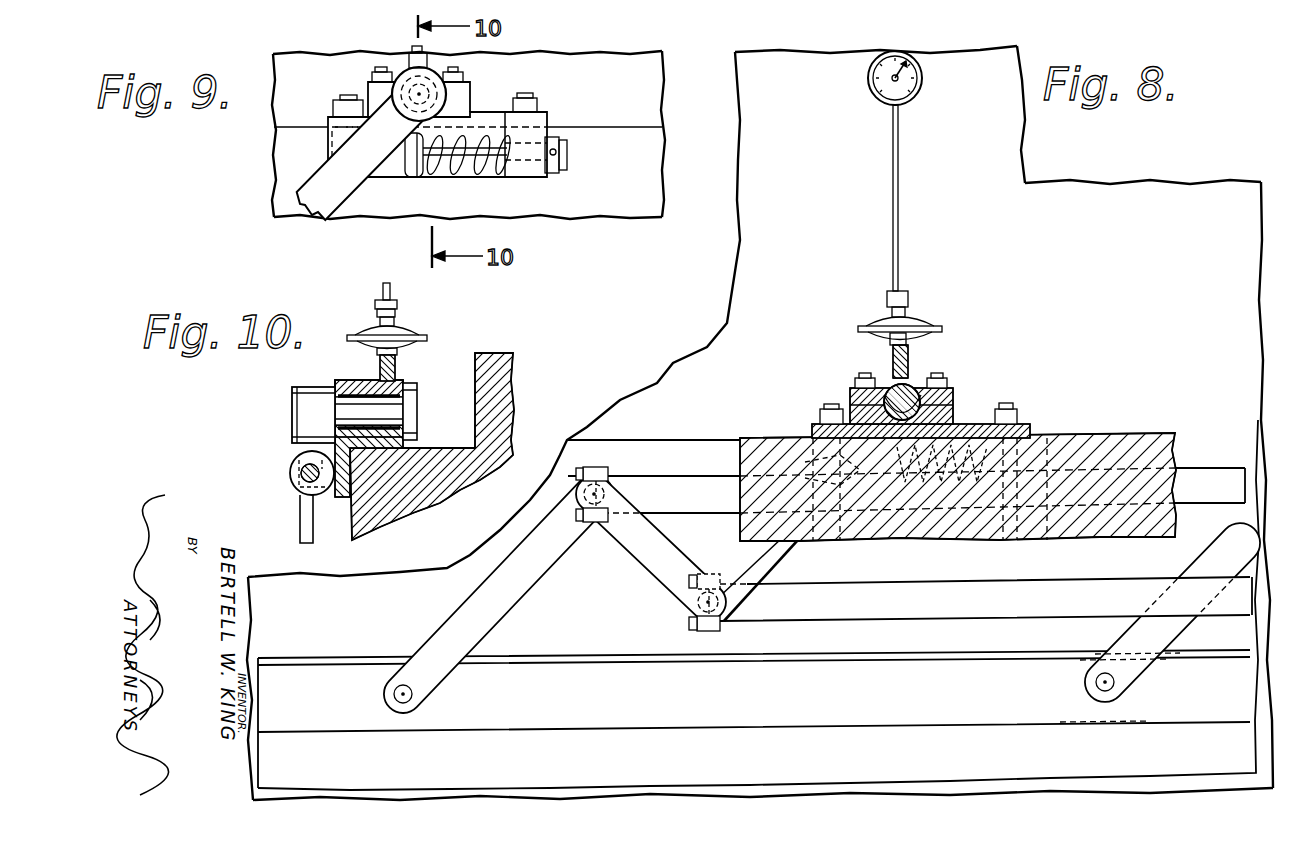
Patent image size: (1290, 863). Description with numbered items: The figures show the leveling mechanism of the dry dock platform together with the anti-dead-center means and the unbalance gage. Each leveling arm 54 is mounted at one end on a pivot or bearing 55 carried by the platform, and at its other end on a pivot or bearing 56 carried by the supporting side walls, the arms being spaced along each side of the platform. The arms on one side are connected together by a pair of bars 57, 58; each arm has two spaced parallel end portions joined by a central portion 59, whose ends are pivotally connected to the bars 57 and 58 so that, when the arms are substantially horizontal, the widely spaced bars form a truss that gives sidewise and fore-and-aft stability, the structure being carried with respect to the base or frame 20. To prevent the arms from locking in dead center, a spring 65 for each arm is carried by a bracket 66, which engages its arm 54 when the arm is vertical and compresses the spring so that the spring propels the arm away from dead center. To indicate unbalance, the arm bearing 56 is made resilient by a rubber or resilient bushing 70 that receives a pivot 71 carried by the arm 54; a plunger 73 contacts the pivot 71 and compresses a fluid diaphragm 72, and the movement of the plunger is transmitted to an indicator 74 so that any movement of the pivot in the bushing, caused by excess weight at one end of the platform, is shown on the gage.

In FIG. 8, the frame bar 20 is at (358, 670).
In FIG. 9, the arm 54 is at (323, 193).
In FIG. 10, the arm 54 is at (308, 513).
In FIG. 8, the arm 54 is at (490, 590).
In FIG. 8, the pivot or bearing 55 is at (970, 428).
In FIG. 9, the pivot or bearing 56 is at (397, 78).
In FIG. 10, the pivot or bearing 56 is at (361, 380).
In FIG. 8, the pivot or bearing 56 is at (887, 384).
In FIG. 8, the bar 57 is at (687, 482).
In FIG. 8, the bar 58 is at (947, 597).
In FIG. 8, the central portion 59 is at (652, 563).
In FIG. 9, the spring 65 is at (490, 178).
In FIG. 9, the bracket 66 is at (541, 177).
In FIG. 10, the resilient bushing 70 is at (415, 428).
In FIG. 8, the resilient bushing 70 is at (923, 388).
In FIG. 10, the pivot 71 is at (394, 413).
In FIG. 8, the pivot 71 is at (890, 391).
In FIG. 10, the fluid diaphragm 72 is at (404, 333).
In FIG. 8, the fluid diaphragm 72 is at (913, 323).
In FIG. 10, the plunger 73 is at (396, 381).
In FIG. 8, the plunger 73 is at (913, 371).
In FIG. 8, the indicator 74 is at (877, 95).